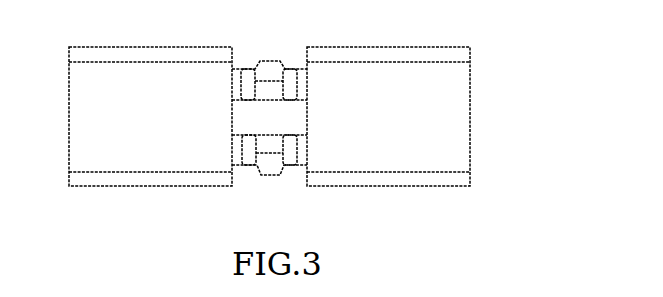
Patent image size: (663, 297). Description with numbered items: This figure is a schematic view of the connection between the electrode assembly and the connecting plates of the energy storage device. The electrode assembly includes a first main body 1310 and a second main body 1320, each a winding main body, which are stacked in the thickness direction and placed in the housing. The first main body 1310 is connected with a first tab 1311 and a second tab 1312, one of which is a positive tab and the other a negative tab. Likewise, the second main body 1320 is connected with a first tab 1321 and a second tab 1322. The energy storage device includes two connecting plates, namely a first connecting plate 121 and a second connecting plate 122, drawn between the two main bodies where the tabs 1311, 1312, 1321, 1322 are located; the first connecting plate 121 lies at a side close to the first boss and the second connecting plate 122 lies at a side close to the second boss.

The first main body 1310 is at (132, 160).
The second main body 1320 is at (410, 75).
The first main body first tab 1311 is at (232, 92).
The first main body second tab 1312 is at (233, 157).
The second main body first tab 1321 is at (300, 68).
The second main body second tab 1322 is at (297, 150).
The first connecting plate 121 is at (270, 67).
The second connecting plate 122 is at (262, 165).